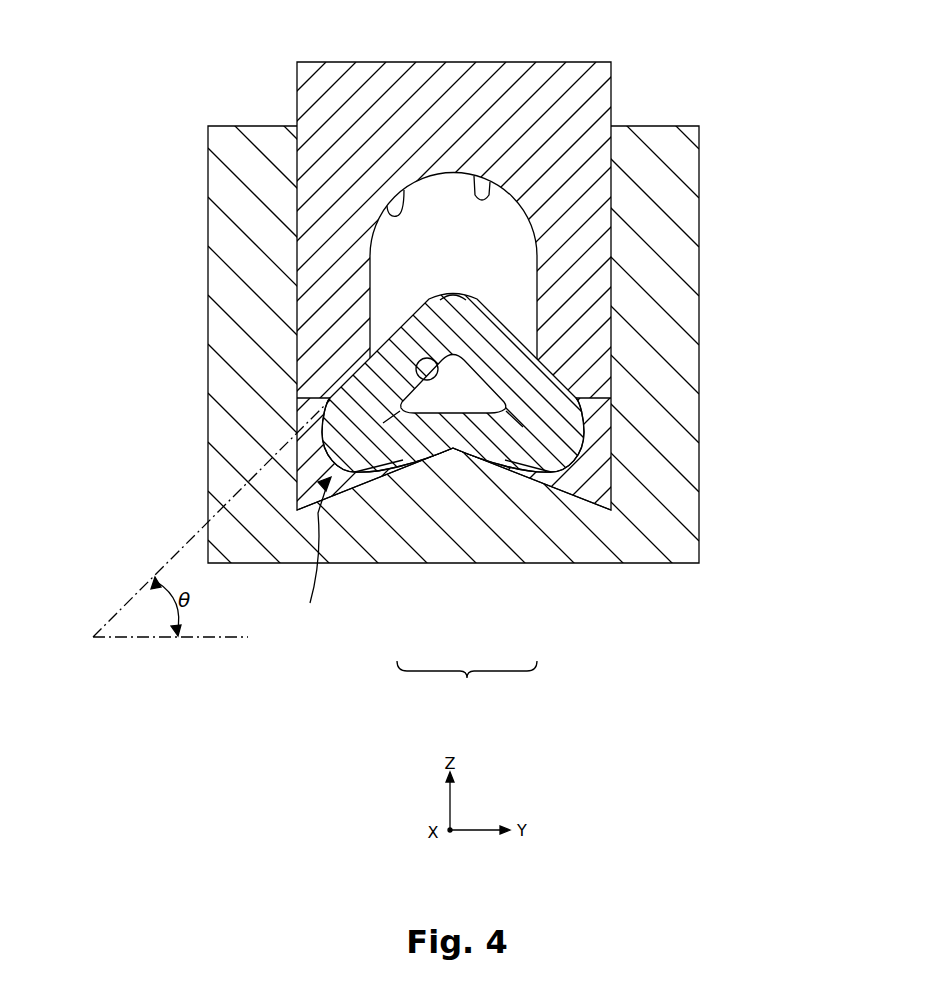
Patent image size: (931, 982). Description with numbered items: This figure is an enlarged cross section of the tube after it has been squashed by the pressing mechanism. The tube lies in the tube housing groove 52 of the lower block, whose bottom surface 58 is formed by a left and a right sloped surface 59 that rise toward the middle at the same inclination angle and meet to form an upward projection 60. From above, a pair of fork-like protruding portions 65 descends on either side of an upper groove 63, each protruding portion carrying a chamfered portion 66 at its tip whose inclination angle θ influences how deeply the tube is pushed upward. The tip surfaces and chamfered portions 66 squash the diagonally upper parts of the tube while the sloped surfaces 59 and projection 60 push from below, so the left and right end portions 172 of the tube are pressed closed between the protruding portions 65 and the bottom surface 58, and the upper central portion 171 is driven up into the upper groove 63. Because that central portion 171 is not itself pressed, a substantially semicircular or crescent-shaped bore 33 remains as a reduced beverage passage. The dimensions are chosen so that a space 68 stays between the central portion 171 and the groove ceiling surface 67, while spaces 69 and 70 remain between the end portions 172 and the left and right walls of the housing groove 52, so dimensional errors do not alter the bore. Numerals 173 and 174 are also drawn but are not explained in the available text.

The deformed bore 33 is at (416, 376).
The tube housing groove 52 is at (314, 553).
The bottom surface 58 is at (467, 685).
The sloped surface 59 is at (423, 457).
The projection 60 is at (465, 465).
The upper groove 63 is at (393, 203).
The protruding portion 65 is at (340, 247).
The chamfered portion 66 is at (372, 400).
The bottom surface of the upper groove 67 is at (481, 198).
The space 68 is at (492, 223).
The space 69 is at (315, 466).
The space 70 is at (595, 467).
The upper central portion 171 is at (453, 380).
The end portion 172 is at (335, 445).
The upper lobe surface 173 is at (350, 396).
The bottom surface 174 is at (403, 447).